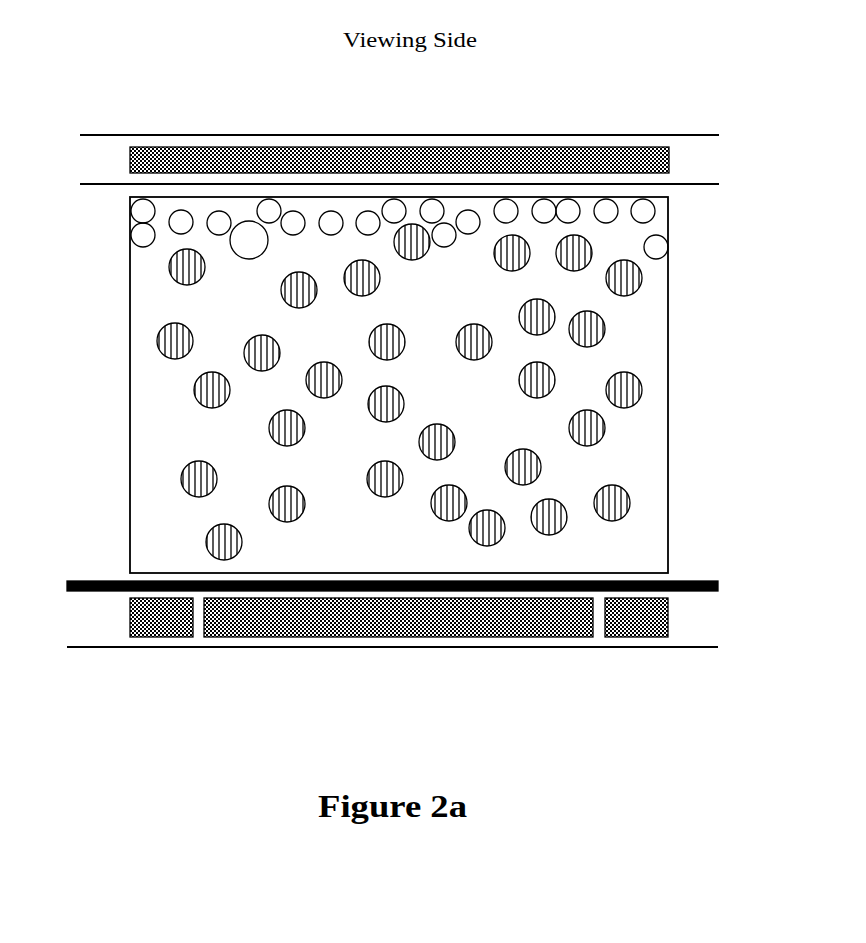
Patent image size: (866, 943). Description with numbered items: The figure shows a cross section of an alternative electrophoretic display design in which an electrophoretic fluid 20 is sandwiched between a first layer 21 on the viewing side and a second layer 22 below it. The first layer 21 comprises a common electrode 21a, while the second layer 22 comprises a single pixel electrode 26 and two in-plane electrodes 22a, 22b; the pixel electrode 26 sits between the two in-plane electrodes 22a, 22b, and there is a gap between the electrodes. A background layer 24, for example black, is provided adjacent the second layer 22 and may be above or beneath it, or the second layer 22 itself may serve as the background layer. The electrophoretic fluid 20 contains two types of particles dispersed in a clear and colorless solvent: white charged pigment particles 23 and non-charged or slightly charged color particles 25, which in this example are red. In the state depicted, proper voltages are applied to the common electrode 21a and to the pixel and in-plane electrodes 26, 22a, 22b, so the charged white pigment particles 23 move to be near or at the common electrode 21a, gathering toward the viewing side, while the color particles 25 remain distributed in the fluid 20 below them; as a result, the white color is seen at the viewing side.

The electrophoretic fluid 20 is at (669, 385).
The first layer 21 is at (105, 146).
The common electrode 21a is at (180, 160).
The second layer 22 is at (705, 623).
The in-plane electrode 22a is at (168, 625).
The in-plane electrode 22b is at (643, 627).
The white charged pigment particles 23 is at (568, 207).
The background layer 24 is at (732, 585).
The color particles 25 is at (165, 348).
The pixel electrode 26 is at (406, 613).